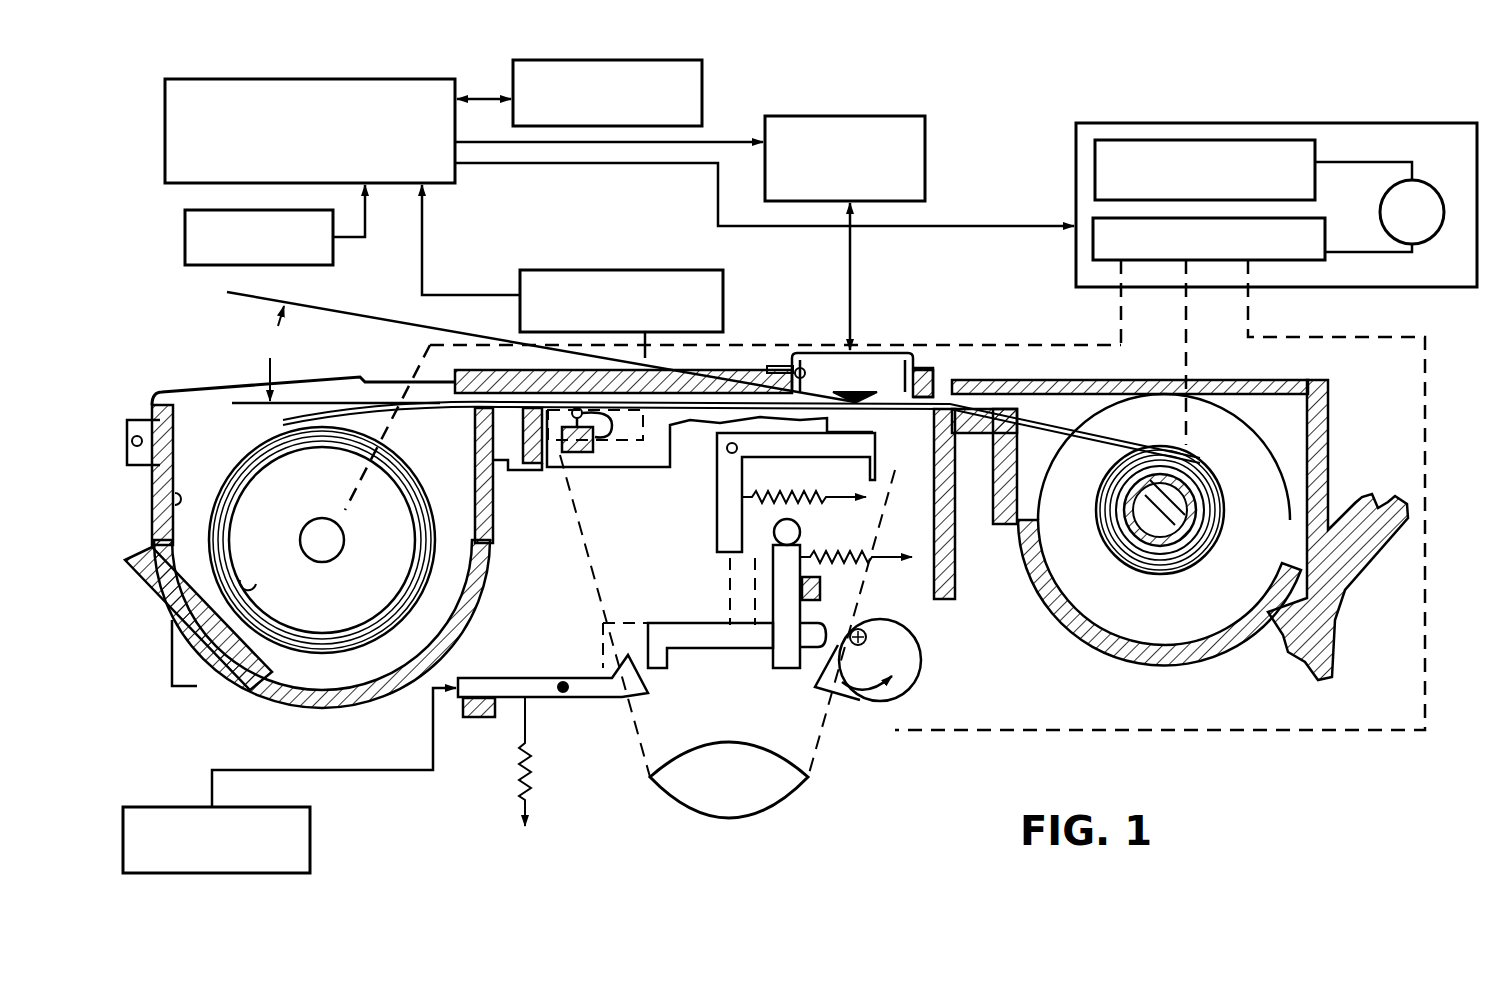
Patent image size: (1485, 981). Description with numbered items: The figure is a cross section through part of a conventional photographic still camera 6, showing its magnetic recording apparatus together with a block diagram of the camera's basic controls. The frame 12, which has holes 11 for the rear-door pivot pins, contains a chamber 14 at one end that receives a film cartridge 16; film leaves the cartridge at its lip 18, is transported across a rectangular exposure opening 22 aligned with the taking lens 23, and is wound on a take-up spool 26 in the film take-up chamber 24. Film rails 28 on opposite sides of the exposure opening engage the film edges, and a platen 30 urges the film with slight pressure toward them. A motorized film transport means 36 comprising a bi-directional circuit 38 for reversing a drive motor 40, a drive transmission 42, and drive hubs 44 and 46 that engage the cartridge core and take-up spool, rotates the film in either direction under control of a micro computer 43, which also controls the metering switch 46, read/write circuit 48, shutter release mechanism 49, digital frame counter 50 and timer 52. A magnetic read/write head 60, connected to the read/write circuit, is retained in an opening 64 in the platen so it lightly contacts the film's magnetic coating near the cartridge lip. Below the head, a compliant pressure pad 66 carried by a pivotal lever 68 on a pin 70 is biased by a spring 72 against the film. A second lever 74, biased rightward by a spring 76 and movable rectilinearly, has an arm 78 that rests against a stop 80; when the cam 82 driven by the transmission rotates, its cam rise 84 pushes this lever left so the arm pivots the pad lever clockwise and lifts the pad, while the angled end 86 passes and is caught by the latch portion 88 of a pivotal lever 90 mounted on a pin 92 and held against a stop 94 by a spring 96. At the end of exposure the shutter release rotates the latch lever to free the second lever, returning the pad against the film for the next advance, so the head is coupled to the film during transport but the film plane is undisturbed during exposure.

The photographic still camera 6 is at (156, 699).
The holes 11 is at (122, 440).
The frame 12 is at (1047, 650).
The chamber 14 is at (1318, 445).
The film cartridge 16 is at (1255, 415).
The lip 18 is at (975, 380).
The rectangular exposure opening 22 is at (550, 470).
The taking lens 23 is at (790, 808).
The film take-up chamber 24 is at (155, 513).
The take-up spool 26 is at (240, 588).
The film rails 28 is at (665, 400).
The platen 30 is at (495, 370).
The motorized film transport means 36 is at (1138, 123).
The bi-directional circuit 38 is at (1222, 140).
The drive motor 40 is at (1418, 182).
The drive transmission 42 is at (1093, 248).
The micro computer 43 is at (283, 79).
The drive hub 44 is at (1165, 540).
The drive hub / metering switch 46 is at (620, 270).
The read/write circuit 48 is at (925, 130).
The shutter release mechanism 49 is at (310, 840).
The digital frame counter 50 is at (702, 66).
The timer 52 is at (185, 237).
The magnetic read/write head 60 is at (880, 355).
The opening 64 is at (800, 367).
The pressure pad 66 is at (840, 392).
The pivotal lever 68 is at (716, 468).
The pin 70 is at (715, 450).
The spring 72 is at (820, 499).
The second lever 74 is at (693, 623).
The spring 76 is at (862, 559).
The arm 78 is at (787, 655).
The stop 80 is at (812, 647).
The cam 82 is at (921, 660).
The cam rise 84 is at (853, 712).
The angled end 86 is at (668, 668).
The latch portion 88 is at (600, 670).
The pivotal lever 90 is at (595, 697).
The pin 92 is at (560, 683).
The stop 94 is at (478, 718).
The spring 96 is at (532, 775).